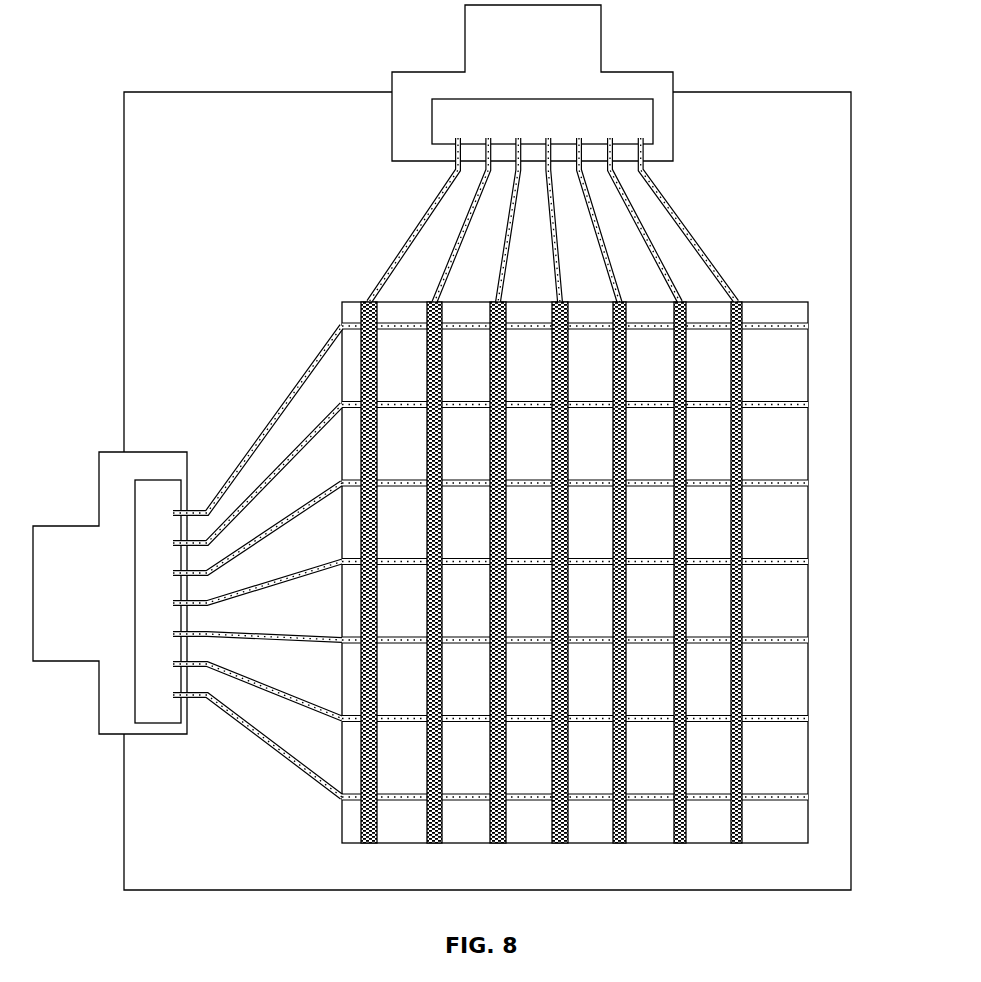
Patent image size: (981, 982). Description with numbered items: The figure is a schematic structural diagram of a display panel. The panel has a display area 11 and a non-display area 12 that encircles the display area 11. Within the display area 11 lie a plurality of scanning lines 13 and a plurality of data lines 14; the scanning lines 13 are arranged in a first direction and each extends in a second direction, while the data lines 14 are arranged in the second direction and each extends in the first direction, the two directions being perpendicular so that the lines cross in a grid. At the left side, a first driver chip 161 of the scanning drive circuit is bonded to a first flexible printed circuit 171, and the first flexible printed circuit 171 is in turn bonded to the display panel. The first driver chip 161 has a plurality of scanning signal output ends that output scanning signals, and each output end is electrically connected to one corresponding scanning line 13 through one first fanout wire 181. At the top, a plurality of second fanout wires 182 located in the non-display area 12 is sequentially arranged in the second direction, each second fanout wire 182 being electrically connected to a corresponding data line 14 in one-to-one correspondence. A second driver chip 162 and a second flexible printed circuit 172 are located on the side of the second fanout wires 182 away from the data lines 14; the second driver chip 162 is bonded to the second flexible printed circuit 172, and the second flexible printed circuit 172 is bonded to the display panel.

The display area 11 is at (808, 369).
The non-display area 12 is at (842, 219).
The scanning lines 13 is at (761, 323).
The data lines 14 is at (738, 350).
The first driver chip 161 is at (159, 490).
The second driver chip 162 is at (633, 108).
The first flexible printed circuit 171 is at (70, 530).
The second flexible printed circuit 172 is at (483, 28).
The first fanout wires 181 is at (282, 398).
The second fanout wires 182 is at (408, 240).